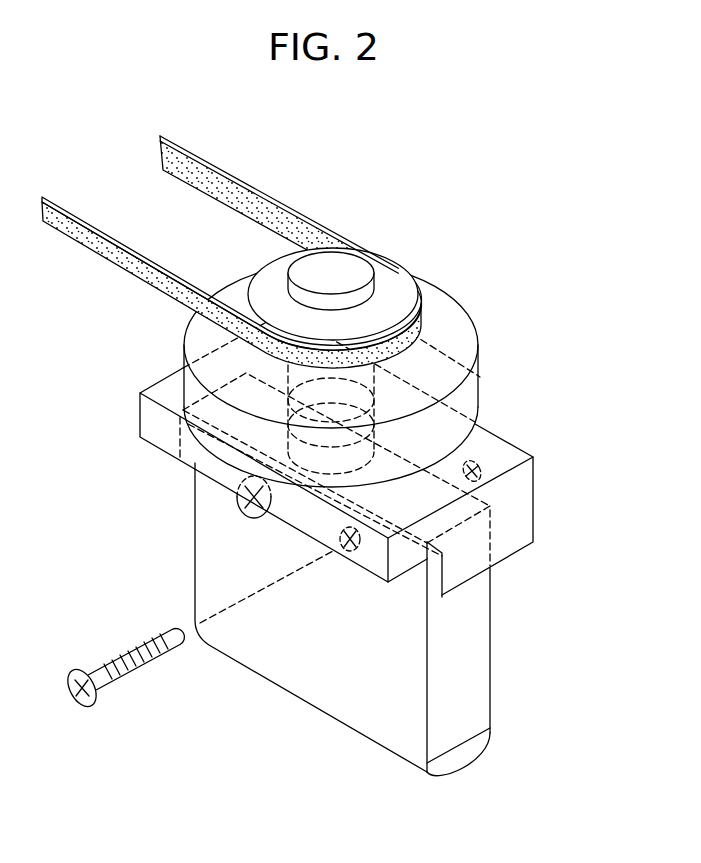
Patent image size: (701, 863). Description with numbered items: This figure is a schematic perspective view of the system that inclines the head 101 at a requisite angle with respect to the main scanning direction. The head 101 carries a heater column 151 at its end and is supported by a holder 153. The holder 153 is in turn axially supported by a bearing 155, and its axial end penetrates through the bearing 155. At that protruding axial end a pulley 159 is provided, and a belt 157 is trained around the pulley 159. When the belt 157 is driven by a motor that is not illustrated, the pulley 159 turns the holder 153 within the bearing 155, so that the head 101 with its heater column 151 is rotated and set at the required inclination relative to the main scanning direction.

The head 101 is at (490, 655).
The heater column 151 is at (486, 760).
The holder 153 is at (533, 516).
The bearing 155 is at (477, 381).
The belt 157 is at (283, 200).
The pulley 159 is at (382, 273).